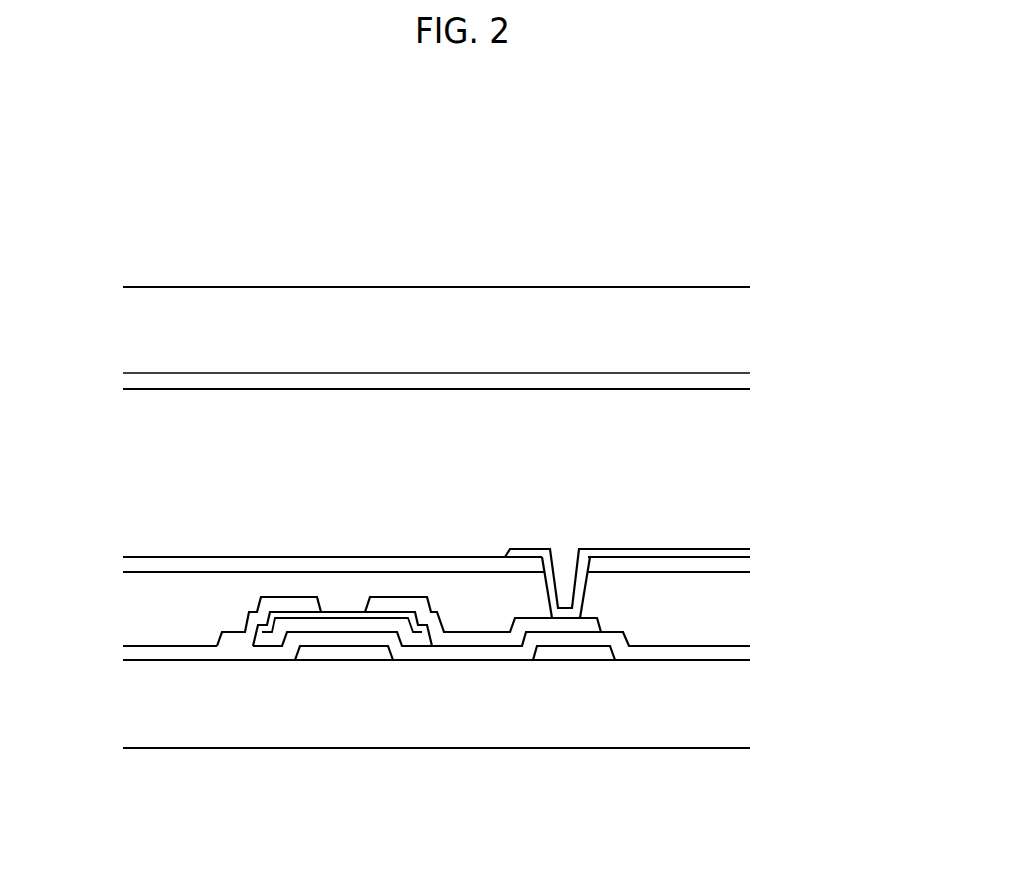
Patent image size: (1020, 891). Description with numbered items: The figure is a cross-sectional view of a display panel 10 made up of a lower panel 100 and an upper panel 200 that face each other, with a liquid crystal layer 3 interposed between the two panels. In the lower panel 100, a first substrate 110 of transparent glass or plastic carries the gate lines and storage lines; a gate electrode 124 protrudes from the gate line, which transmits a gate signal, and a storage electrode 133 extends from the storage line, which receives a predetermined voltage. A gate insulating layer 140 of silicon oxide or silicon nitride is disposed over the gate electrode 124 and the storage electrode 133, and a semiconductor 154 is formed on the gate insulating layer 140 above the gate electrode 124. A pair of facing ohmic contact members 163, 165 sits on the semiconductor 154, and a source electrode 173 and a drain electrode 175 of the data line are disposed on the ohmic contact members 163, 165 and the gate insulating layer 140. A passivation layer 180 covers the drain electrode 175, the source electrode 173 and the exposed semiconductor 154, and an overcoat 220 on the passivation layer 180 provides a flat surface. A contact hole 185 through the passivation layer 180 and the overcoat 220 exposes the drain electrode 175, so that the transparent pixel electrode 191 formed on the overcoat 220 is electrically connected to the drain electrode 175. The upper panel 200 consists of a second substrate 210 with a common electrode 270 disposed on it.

The display panel 10 is at (191, 231).
The upper panel 200 is at (467, 310).
The second substrate 210 is at (374, 305).
The common electrode 270 is at (277, 380).
The liquid crystal layer 3 is at (751, 390).
The lower panel 100 is at (467, 534).
The first substrate 110 is at (648, 744).
The gate electrode 124 is at (358, 653).
The storage electrode 133 is at (555, 650).
The gate insulating layer 140 is at (500, 653).
The semiconductor 154 is at (323, 625).
The ohmic contact member 163 is at (262, 627).
The ohmic contact member 165 is at (422, 630).
The source electrode 173 is at (228, 640).
The drain electrode 175 is at (457, 640).
The passivation layer 180 is at (690, 617).
The contact hole 185 is at (578, 583).
The pixel electrode 191 is at (522, 553).
The overcoat 220 is at (408, 562).